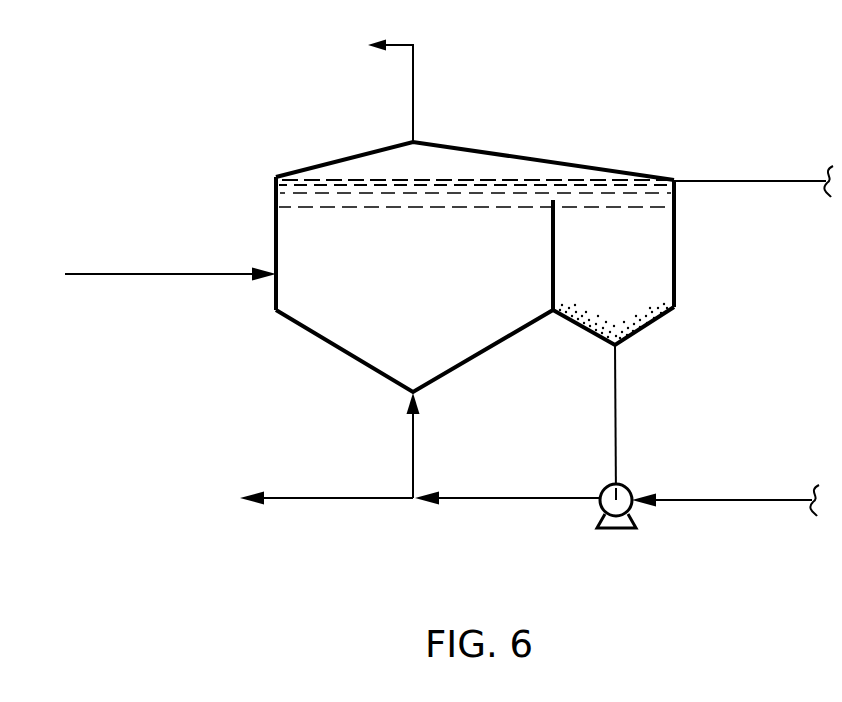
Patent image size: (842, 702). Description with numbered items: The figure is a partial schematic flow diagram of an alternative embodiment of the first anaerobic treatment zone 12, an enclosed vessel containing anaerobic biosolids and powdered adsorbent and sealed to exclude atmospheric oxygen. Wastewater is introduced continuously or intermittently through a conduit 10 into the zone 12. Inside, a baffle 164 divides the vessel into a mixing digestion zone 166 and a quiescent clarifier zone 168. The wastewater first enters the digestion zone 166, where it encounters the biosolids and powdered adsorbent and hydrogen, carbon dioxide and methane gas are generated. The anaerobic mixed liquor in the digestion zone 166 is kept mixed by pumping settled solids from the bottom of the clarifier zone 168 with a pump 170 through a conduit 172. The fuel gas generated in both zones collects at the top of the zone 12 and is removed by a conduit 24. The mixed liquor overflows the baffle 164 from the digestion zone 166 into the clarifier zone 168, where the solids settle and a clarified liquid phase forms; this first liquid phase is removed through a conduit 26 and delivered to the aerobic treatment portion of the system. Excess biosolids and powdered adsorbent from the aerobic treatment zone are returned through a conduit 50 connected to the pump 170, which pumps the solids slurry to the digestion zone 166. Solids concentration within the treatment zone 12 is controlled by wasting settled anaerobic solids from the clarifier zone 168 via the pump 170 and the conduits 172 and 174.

The conduit 10 is at (181, 274).
The first anaerobic treatment zone 12 is at (338, 158).
The conduit 24 is at (415, 89).
The conduit 26 is at (733, 181).
The conduit 50 is at (748, 500).
The baffle 164 is at (553, 248).
The mixing digestion zone 166 is at (435, 268).
The quiescent clarifier zone 168 is at (638, 269).
The pump 170 is at (627, 485).
The conduit 172 is at (494, 499).
The conduit 174 is at (318, 498).